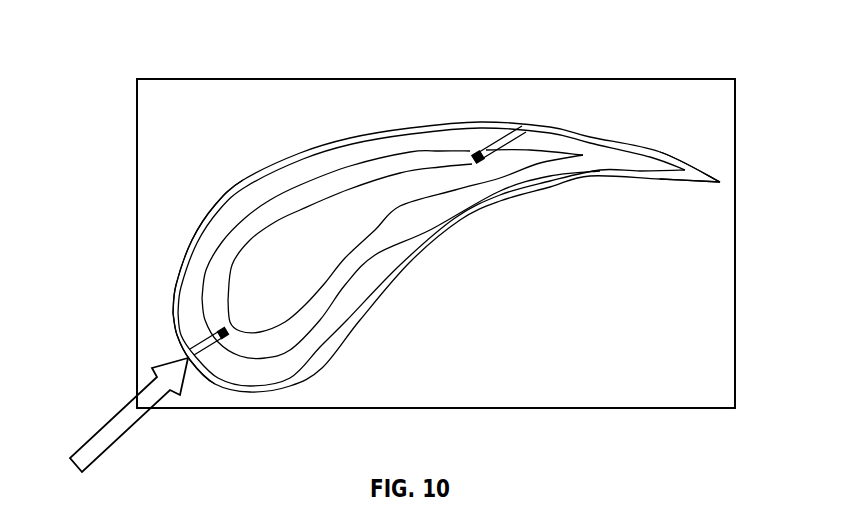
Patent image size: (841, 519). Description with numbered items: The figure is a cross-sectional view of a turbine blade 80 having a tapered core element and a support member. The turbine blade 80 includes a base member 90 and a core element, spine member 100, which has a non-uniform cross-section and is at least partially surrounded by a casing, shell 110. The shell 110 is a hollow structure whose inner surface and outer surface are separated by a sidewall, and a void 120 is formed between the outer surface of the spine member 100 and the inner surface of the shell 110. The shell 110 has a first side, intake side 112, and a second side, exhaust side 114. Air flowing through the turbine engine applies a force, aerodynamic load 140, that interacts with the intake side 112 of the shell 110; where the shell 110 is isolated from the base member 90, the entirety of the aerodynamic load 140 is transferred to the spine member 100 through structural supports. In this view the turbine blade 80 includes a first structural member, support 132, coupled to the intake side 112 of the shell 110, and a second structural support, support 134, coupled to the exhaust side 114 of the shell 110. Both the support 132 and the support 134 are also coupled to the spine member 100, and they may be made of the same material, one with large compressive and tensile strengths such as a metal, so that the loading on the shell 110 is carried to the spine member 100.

The turbine blade 80 is at (178, 64).
The base member 90 is at (713, 268).
The spine member 100 is at (430, 160).
The shell 110 is at (580, 134).
The intake side 112 is at (176, 298).
The exhaust side 114 is at (664, 150).
The void 120 is at (523, 142).
The support 132 is at (213, 342).
The support 134 is at (494, 147).
The aerodynamic load 140 is at (100, 428).